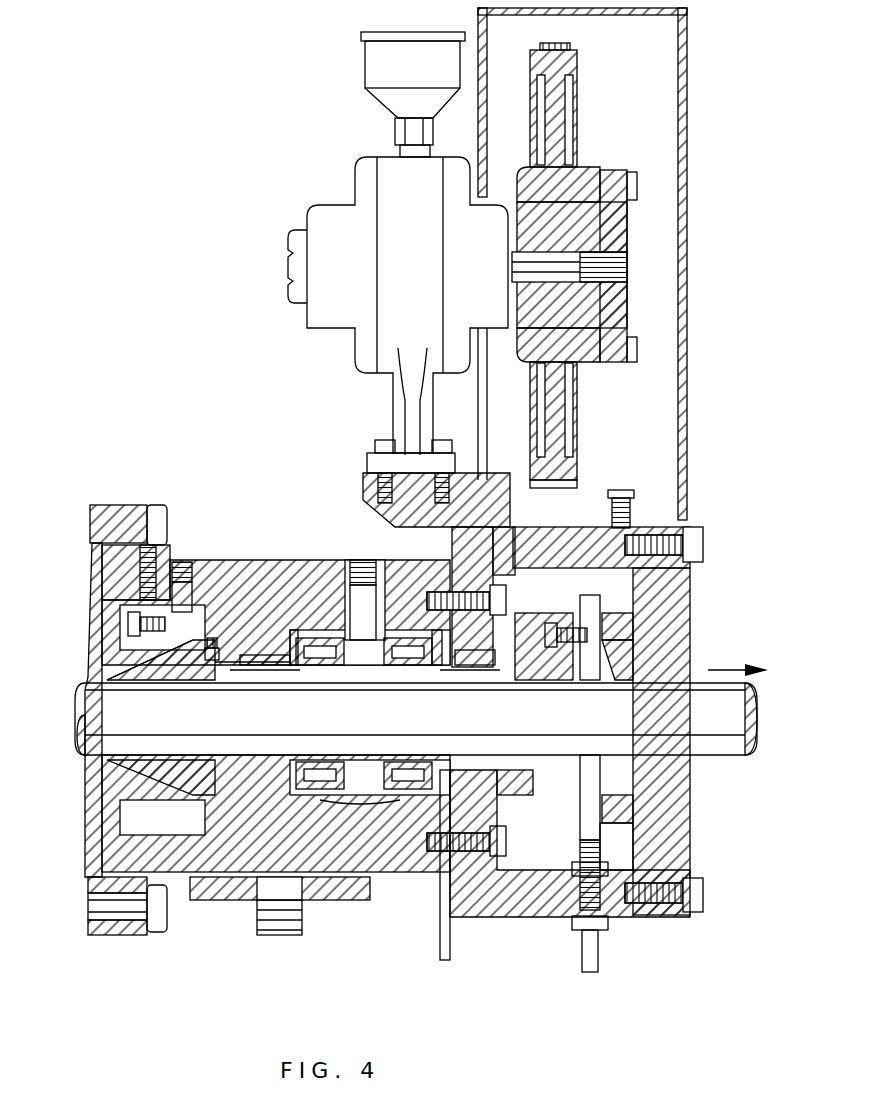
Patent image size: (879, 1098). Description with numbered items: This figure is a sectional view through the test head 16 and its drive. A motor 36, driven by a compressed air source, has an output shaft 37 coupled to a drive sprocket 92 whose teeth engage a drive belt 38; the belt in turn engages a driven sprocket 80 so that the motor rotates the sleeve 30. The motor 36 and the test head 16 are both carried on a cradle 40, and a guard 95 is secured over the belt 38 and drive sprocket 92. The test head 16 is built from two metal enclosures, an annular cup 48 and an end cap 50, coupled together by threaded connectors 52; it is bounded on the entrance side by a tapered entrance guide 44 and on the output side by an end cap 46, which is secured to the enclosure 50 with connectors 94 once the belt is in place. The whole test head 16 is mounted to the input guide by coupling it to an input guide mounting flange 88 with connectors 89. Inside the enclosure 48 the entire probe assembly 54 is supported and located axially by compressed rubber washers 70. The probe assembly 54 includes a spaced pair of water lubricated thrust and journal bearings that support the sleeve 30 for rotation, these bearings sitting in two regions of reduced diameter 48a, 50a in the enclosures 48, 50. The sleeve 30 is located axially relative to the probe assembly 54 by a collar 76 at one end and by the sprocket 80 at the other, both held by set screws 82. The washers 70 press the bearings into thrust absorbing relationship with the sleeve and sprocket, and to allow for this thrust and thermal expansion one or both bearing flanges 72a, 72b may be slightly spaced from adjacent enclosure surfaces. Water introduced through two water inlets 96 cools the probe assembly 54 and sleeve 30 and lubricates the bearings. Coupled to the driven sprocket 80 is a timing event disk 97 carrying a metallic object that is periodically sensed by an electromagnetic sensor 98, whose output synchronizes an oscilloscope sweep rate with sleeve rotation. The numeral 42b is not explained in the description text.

The test head 16 is at (350, 563).
The rotatable sleeve 30 is at (257, 652).
The motor 36 is at (382, 185).
The output shaft 37 is at (560, 262).
The drive belt 38 is at (560, 48).
The cradle 40 is at (335, 902).
The lower housing portion 42b is at (510, 905).
The tapered entrance guide 44 is at (125, 770).
The end cap 46 is at (680, 610).
The annular cup enclosure 48 is at (260, 560).
The region of reduced diameter 48a is at (240, 652).
The end cap enclosure 50 is at (585, 525).
The region of reduced diameter 50a is at (480, 658).
The threaded connectors 52 is at (494, 603).
The probe assembly 54 is at (366, 692).
The compressed rubber washers 70 is at (292, 640).
The bearing flange 72a is at (268, 665).
The bearing flange 72b is at (456, 666).
The collar 76 is at (200, 656).
The driven sprocket 80 is at (556, 662).
The set screws 82 is at (213, 650).
The input guide mounting flange 88 is at (88, 565).
The connectors 89 is at (160, 522).
The drive sprocket 92 is at (565, 100).
The connectors 94 is at (700, 537).
The guard 95 is at (690, 98).
The water inlets 96 is at (180, 602).
The timing event disk 97 is at (588, 582).
The electromagnetic sensor 98 is at (600, 853).